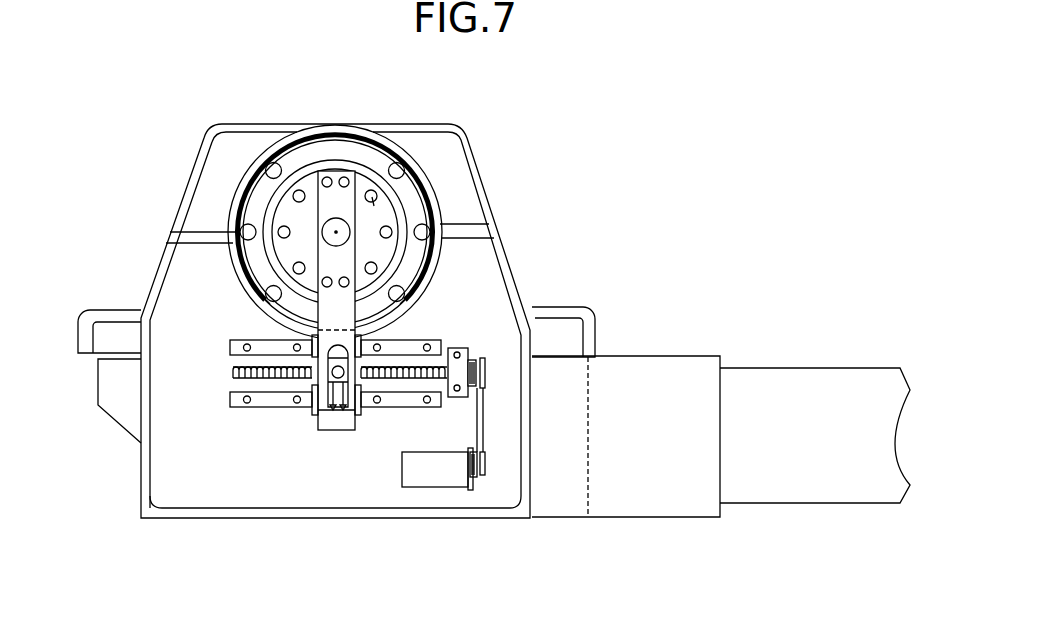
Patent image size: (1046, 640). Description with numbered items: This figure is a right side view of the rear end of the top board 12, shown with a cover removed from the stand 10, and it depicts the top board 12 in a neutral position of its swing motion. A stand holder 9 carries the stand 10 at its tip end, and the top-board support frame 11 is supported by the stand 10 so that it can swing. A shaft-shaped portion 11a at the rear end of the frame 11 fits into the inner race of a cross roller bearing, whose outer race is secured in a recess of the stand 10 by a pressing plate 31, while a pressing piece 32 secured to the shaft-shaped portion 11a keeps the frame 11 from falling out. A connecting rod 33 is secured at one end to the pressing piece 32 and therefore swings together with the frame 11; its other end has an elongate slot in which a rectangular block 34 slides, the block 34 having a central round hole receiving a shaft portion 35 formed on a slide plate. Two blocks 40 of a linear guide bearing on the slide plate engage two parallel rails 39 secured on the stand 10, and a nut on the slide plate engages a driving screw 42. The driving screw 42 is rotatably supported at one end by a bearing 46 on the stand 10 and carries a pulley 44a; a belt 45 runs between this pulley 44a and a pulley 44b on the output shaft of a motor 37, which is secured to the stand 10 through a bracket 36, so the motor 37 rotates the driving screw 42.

The stand holder 9 is at (785, 498).
The stand 10 is at (458, 128).
The top-board support frame 11 is at (127, 433).
The shaft-shaped portion 11a is at (372, 197).
The top board 12 is at (110, 310).
The pressing plate 31 is at (298, 150).
The pressing piece 32 is at (383, 214).
The connecting rod 33 is at (334, 170).
The rectangular block 34 is at (332, 430).
The shaft portion 35 is at (338, 390).
The bracket 36 is at (468, 491).
The motor 37 is at (412, 481).
The rails 39 is at (237, 340).
The blocks of linear guide bearing 40 is at (427, 340).
The driving screw 42 is at (233, 372).
The pulley 44a is at (485, 362).
The pulley 44b is at (483, 468).
The belt 45 is at (485, 420).
The bearing 46 is at (457, 348).